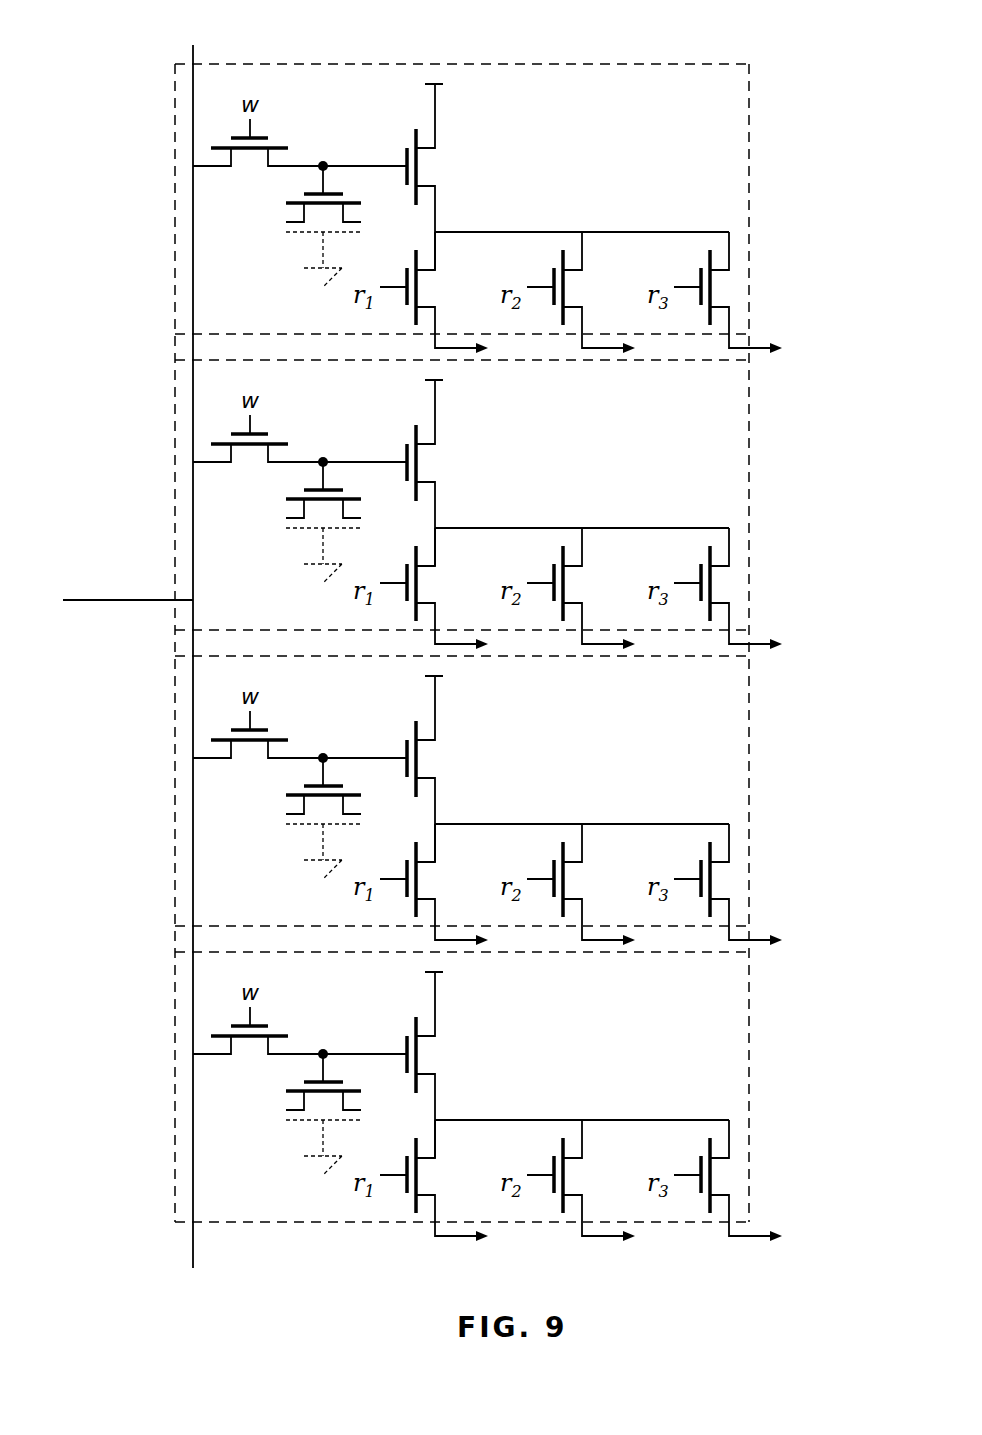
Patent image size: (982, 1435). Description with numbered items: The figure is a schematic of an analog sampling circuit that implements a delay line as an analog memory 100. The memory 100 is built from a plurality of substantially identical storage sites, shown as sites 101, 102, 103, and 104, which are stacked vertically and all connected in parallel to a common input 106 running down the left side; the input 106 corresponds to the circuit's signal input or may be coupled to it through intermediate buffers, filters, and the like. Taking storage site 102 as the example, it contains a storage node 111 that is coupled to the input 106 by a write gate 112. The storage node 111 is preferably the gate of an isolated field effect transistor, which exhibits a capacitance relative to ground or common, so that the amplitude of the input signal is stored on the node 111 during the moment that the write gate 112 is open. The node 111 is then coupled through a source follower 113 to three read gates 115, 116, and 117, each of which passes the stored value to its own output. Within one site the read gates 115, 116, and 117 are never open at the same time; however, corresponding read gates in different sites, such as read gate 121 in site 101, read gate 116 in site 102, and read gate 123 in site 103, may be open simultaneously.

The memory 100 is at (147, 55).
The storage site 101 is at (749, 168).
The storage site 102 is at (506, 504).
The storage site 103 is at (506, 800).
The storage site 104 is at (506, 1096).
The input 106 is at (132, 600).
The storage node 111 is at (346, 430).
The write gate 112 is at (300, 454).
The source follower 113 is at (568, 473).
The read gate 115 is at (441, 588).
The read gate 116 is at (587, 588).
The read gate 117 is at (745, 588).
The read gate 121 is at (418, 288).
The read gate 123 is at (746, 884).